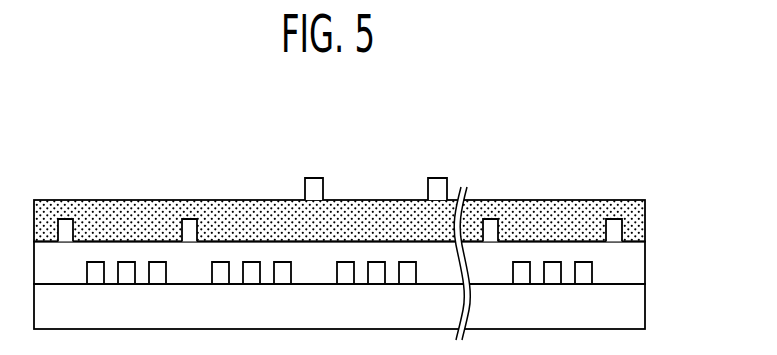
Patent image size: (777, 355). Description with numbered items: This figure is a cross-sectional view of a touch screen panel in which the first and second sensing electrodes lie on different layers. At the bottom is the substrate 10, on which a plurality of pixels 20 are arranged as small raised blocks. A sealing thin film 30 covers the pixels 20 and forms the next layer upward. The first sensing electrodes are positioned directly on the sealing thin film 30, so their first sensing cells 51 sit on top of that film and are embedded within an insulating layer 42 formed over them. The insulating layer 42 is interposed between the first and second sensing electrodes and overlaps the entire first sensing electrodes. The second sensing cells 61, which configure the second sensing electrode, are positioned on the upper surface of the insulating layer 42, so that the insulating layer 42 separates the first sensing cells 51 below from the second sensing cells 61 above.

The substrate 10 is at (645, 305).
The sealing thin film 30 is at (645, 262).
The pixels 20 is at (95, 262).
The insulating layer 42 is at (645, 226).
The first sensing cell 51 is at (66, 218).
The second sensing cell 61 is at (315, 178).